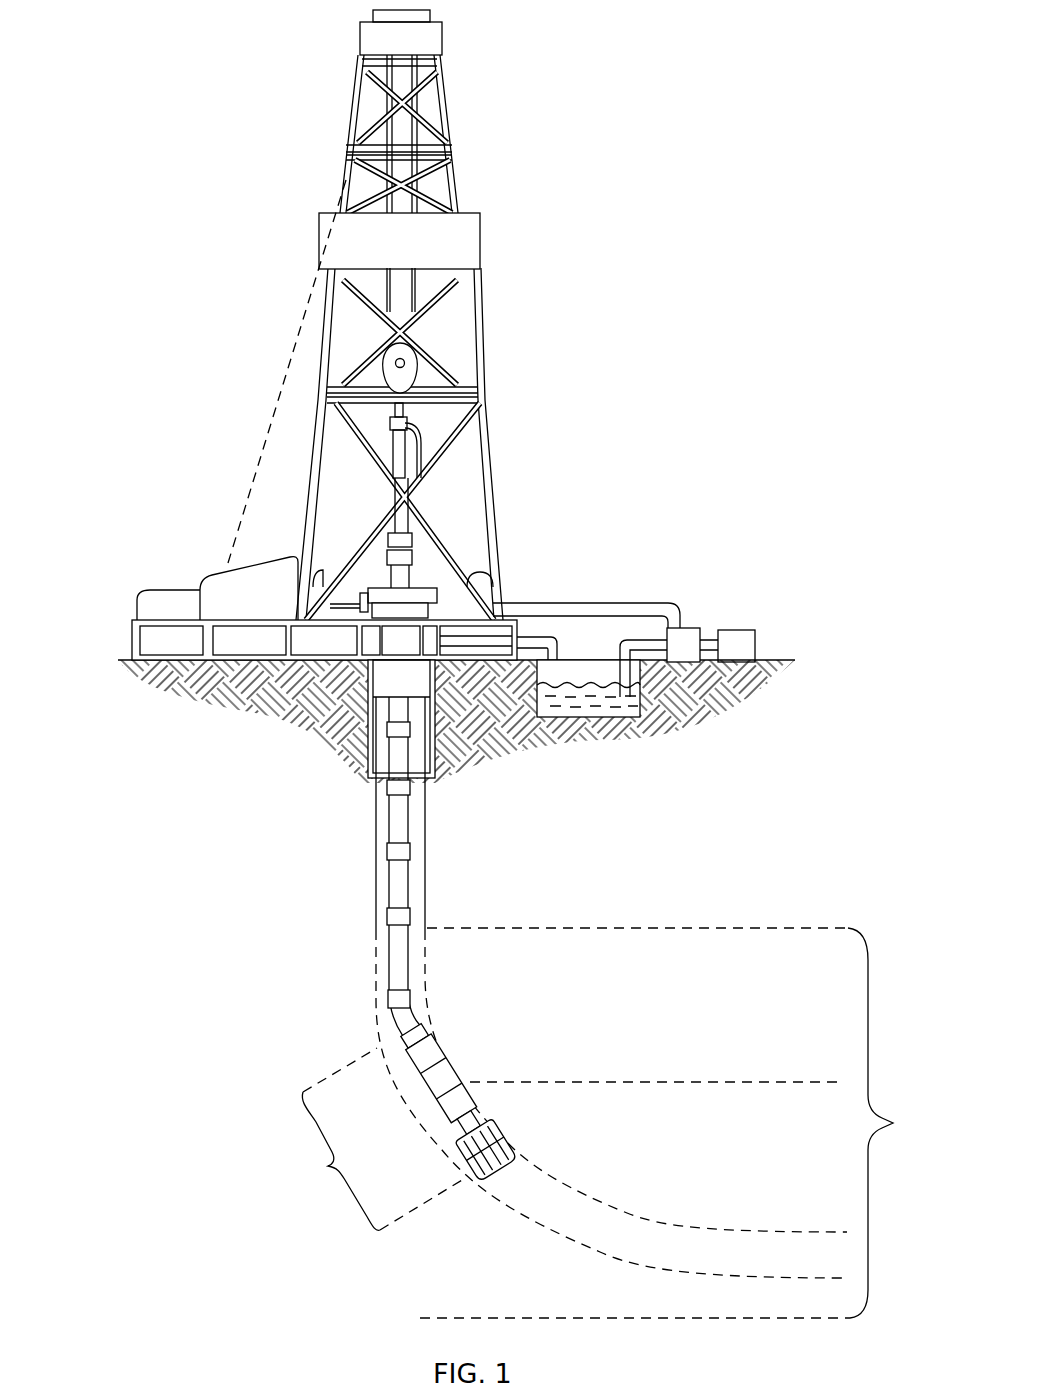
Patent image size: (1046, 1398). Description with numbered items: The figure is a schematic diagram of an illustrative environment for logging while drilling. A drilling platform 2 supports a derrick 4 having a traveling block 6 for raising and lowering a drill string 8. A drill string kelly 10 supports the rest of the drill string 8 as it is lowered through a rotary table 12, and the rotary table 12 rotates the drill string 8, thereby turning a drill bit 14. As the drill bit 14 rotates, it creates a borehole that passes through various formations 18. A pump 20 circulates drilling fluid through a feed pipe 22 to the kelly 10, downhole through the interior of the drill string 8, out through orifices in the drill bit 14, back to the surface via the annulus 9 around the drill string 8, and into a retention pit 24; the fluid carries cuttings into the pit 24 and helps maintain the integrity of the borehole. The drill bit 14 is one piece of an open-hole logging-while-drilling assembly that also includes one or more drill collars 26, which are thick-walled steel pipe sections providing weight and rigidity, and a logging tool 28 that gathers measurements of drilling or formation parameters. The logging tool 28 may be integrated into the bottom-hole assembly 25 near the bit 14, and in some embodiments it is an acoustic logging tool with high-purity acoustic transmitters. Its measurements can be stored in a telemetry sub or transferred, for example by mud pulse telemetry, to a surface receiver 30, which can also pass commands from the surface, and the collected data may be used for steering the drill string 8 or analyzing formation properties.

The drilling platform 2 is at (132, 646).
The derrick 4 is at (456, 148).
The traveling block 6 is at (425, 388).
The drill string 8 is at (409, 830).
The annulus 9 is at (382, 880).
The drill string kelly 10 is at (388, 433).
The rotary table 12 is at (378, 586).
The drill bit 14 is at (510, 1167).
The formations 18 is at (527, 989).
The pump 20 is at (690, 628).
The feed pipe 22 is at (587, 603).
The retention pit 24 is at (569, 693).
The bottom-hole assembly 25 is at (380, 1139).
The drill collars 26 is at (425, 1080).
The logging tool 28 is at (405, 1048).
The surface receiver 30 is at (415, 540).